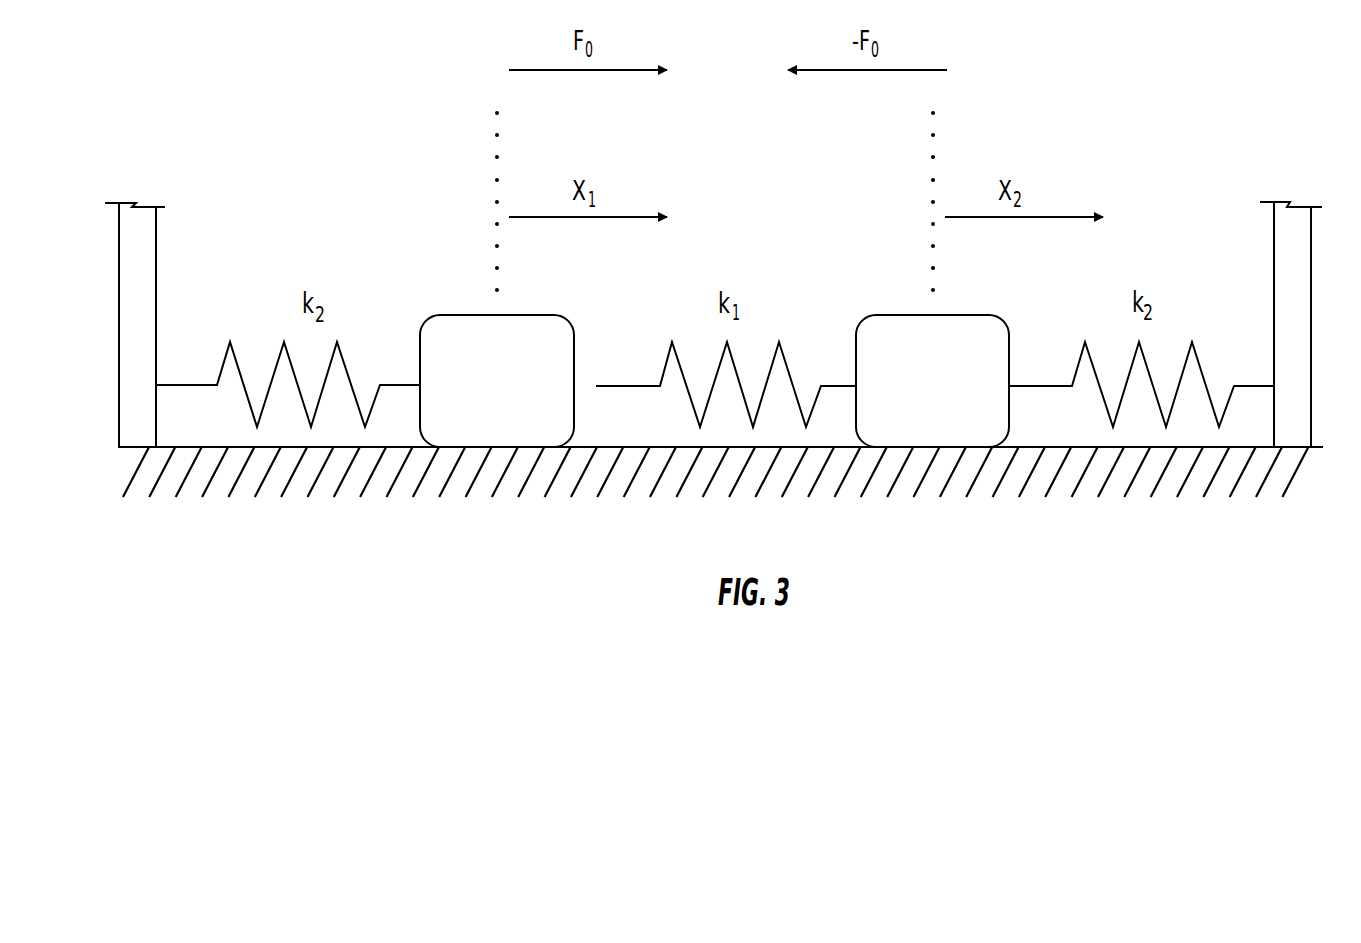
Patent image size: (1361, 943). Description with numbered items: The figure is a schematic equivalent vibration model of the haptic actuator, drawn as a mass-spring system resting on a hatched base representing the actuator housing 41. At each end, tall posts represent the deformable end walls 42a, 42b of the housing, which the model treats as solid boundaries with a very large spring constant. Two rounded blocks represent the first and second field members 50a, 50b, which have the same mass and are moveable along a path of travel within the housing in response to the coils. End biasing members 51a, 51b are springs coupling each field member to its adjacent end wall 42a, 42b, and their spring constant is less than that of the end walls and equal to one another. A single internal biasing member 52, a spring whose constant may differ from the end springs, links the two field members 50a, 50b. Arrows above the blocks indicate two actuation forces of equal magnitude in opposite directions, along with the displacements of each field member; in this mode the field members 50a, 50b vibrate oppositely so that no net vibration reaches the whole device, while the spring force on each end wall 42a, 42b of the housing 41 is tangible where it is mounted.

The actuator housing 41 is at (311, 449).
The deformable end wall 42a is at (119, 343).
The deformable end wall 42b is at (1311, 305).
The field member 50a is at (461, 315).
The field member 50b is at (899, 315).
The end biasing member 51a is at (193, 385).
The end biasing member 51b is at (1244, 386).
The internal biasing member 52 is at (700, 427).